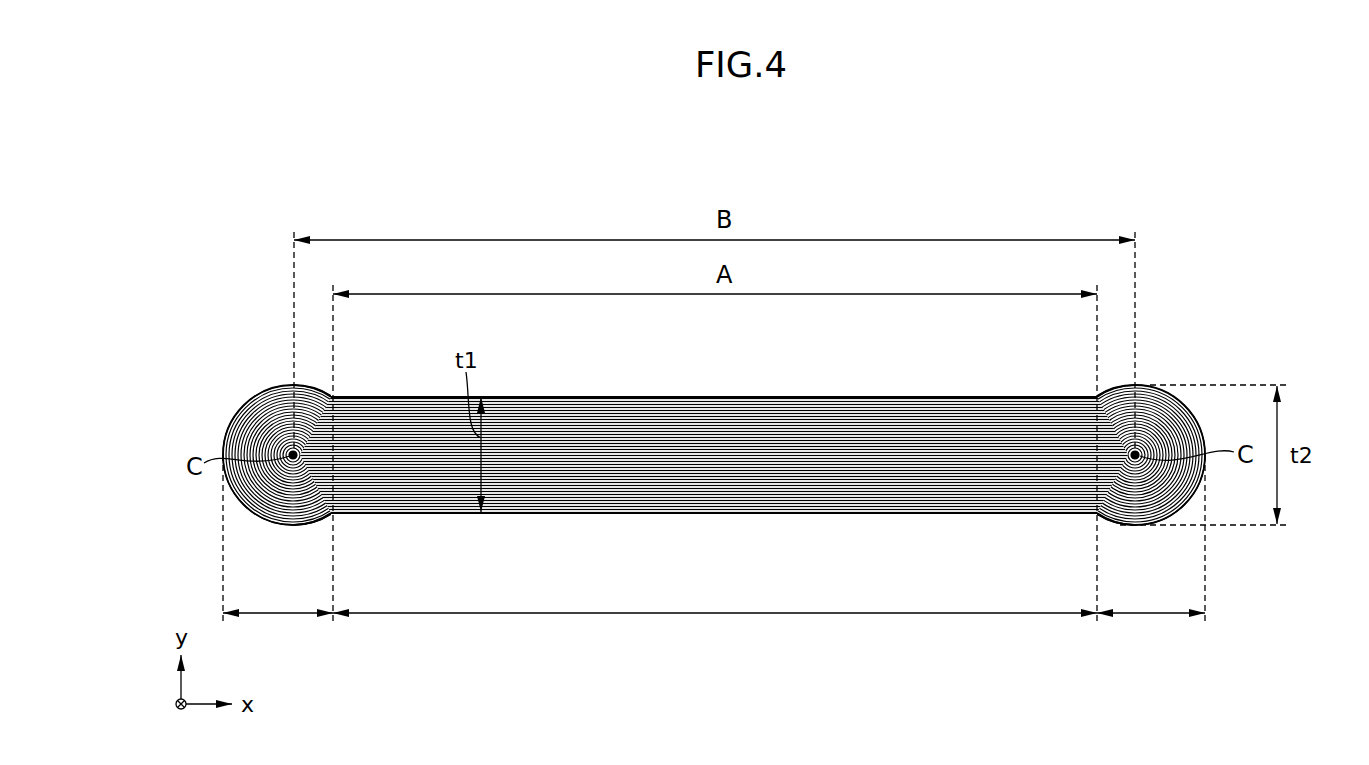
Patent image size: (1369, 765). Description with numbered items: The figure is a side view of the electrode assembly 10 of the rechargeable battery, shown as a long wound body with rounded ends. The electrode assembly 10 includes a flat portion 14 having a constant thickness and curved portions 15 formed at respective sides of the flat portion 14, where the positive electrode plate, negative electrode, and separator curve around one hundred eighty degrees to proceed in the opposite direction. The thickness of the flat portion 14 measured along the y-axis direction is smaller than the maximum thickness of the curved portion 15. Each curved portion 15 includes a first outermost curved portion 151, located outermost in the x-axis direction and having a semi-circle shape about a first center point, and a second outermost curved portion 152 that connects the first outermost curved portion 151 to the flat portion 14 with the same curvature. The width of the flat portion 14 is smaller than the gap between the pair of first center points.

The electrode assembly 10 is at (733, 143).
The flat portion 14 is at (724, 648).
The curved portion 15 is at (290, 648).
The first outermost curved portion 151 is at (228, 425).
The second outermost curved portion 152 is at (308, 385).